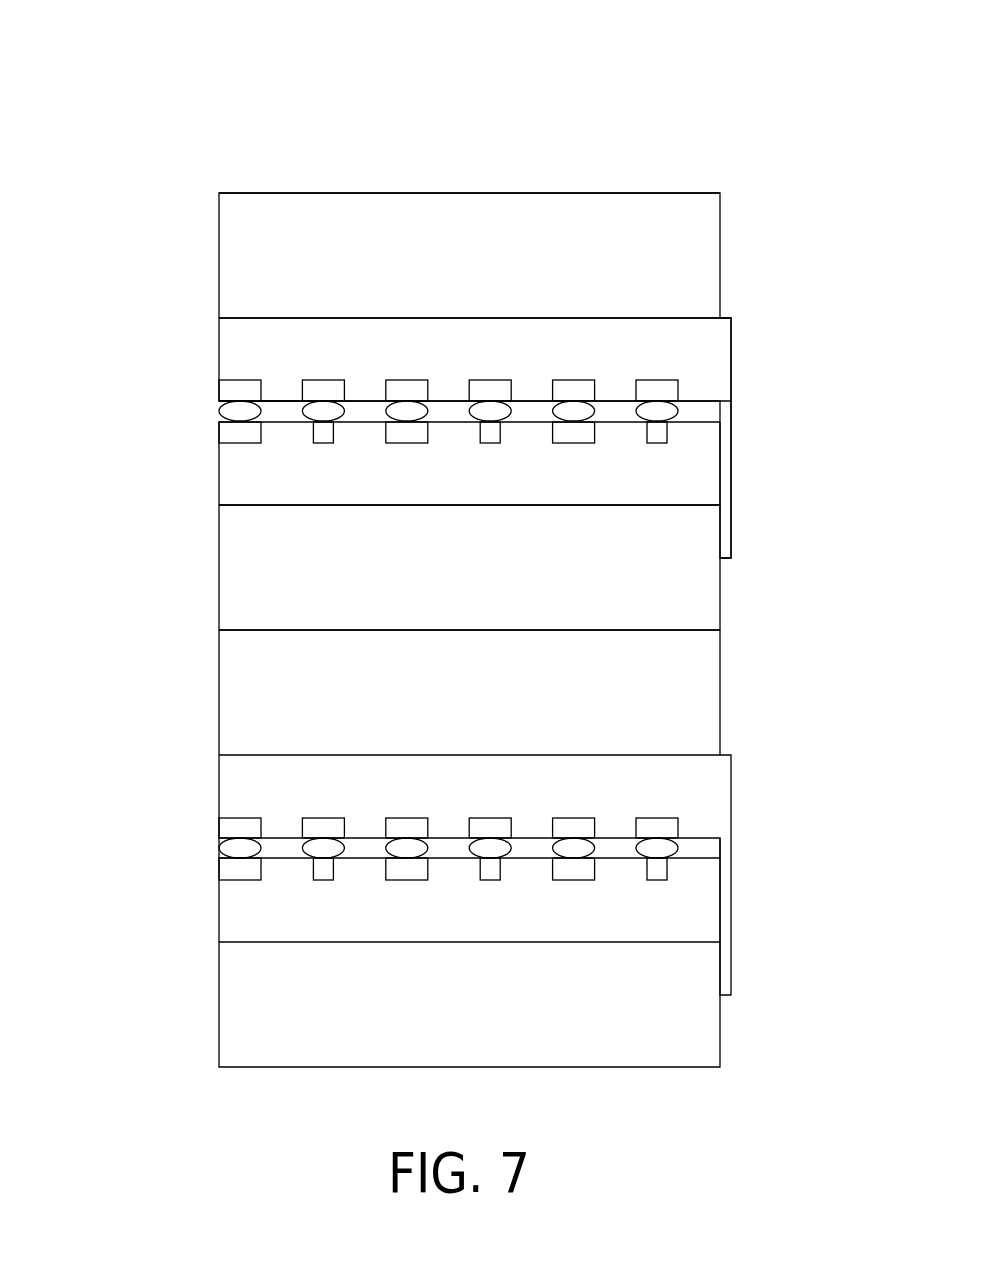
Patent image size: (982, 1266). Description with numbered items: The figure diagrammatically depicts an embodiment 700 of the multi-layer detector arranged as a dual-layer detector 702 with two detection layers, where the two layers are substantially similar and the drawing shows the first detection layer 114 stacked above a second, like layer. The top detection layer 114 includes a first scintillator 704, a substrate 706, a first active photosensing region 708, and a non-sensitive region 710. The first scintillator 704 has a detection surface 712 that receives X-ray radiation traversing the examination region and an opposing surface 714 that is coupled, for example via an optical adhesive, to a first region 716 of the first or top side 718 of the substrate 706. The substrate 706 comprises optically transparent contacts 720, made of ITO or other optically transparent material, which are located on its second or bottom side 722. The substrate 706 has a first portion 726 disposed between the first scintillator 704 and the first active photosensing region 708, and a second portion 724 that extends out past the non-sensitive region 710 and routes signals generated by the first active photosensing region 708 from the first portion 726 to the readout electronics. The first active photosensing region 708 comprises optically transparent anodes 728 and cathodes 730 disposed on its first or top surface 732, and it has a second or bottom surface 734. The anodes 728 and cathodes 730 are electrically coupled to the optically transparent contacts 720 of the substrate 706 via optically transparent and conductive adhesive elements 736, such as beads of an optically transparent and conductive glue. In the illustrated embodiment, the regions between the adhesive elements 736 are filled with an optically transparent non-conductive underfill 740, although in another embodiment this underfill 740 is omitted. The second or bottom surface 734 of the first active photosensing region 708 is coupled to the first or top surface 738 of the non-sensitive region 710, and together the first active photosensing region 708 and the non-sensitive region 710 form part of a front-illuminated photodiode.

The embodiment of the multi-layer detector 700 is at (749, 79).
The dual-layer detector 702 is at (134, 79).
The detection layer 114 is at (100, 595).
The first scintillator 704 is at (237, 242).
The substrate 706 is at (237, 338).
The first active photosensing region 708 is at (245, 495).
The non-sensitive region 710 is at (232, 570).
The detection surface 712 is at (280, 192).
The opposing surface 714 is at (601, 317).
The first region 716 is at (708, 324).
The first/top side 718 is at (666, 317).
The optically transparent contacts 720 is at (670, 390).
The second/bottom side 722 is at (700, 406).
The second portion 724 is at (731, 541).
The first portion 726 is at (241, 363).
The optically transparent anodes 728 is at (658, 440).
The cathodes 730 is at (228, 432).
The first/top surface 732 is at (287, 425).
The second/bottom surface 734 is at (661, 508).
The optically transparent and conductive adhesive elements 736 is at (222, 412).
The first/top surface of the non-sensitive region 738 is at (316, 509).
The optically transparent non-conductive underfill 740 is at (603, 407).